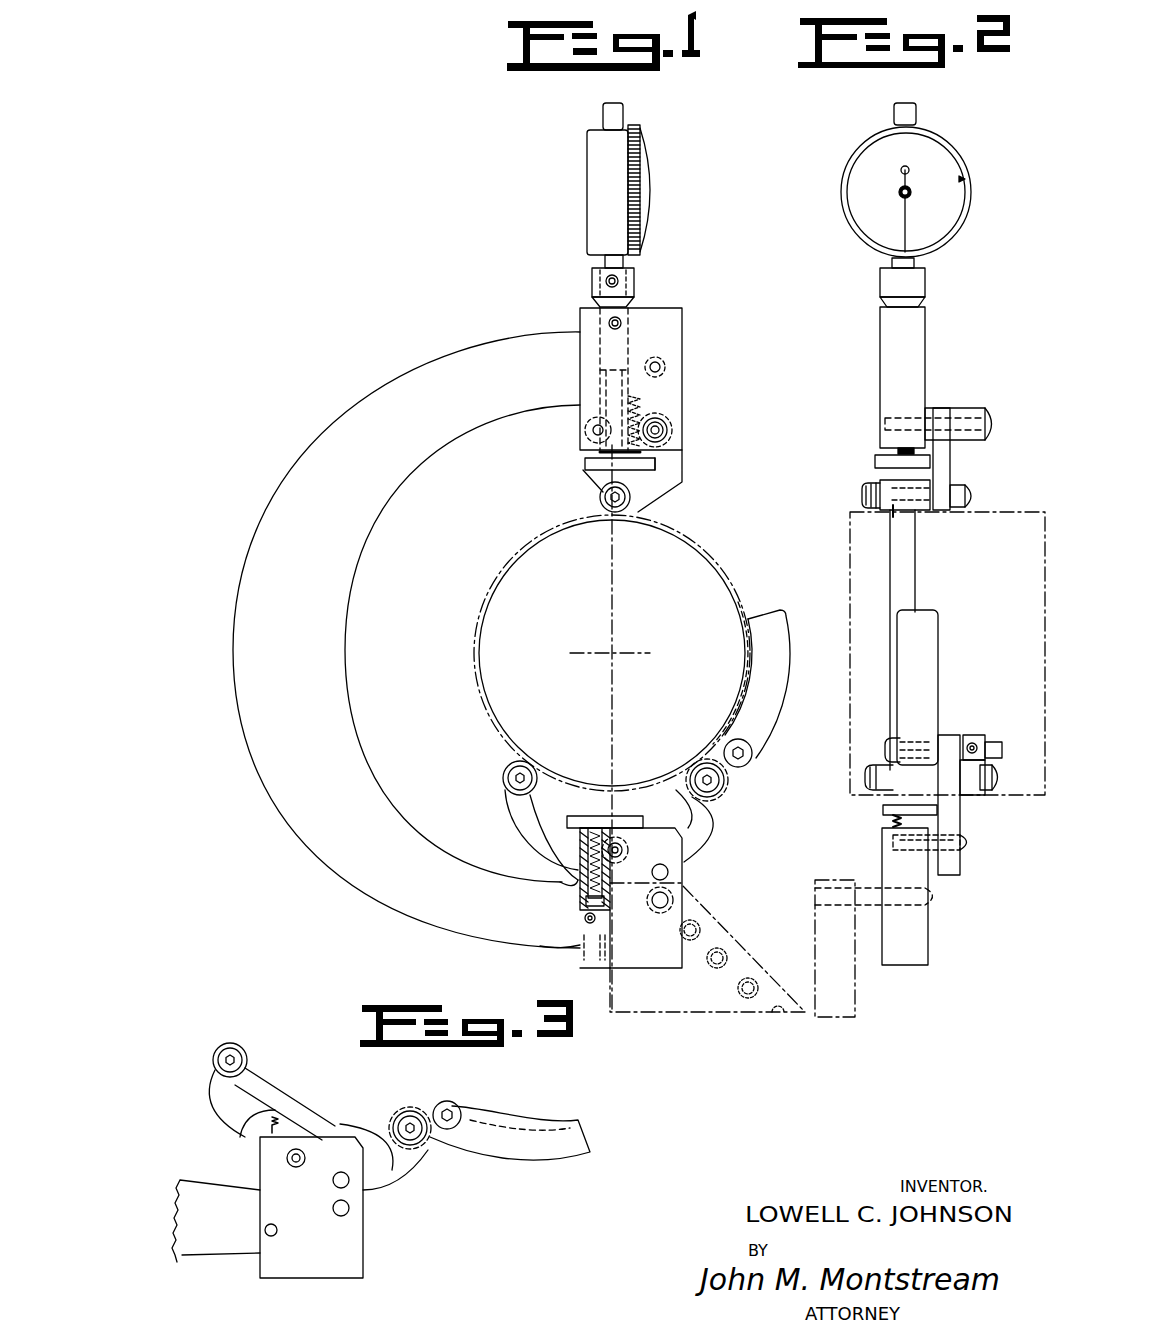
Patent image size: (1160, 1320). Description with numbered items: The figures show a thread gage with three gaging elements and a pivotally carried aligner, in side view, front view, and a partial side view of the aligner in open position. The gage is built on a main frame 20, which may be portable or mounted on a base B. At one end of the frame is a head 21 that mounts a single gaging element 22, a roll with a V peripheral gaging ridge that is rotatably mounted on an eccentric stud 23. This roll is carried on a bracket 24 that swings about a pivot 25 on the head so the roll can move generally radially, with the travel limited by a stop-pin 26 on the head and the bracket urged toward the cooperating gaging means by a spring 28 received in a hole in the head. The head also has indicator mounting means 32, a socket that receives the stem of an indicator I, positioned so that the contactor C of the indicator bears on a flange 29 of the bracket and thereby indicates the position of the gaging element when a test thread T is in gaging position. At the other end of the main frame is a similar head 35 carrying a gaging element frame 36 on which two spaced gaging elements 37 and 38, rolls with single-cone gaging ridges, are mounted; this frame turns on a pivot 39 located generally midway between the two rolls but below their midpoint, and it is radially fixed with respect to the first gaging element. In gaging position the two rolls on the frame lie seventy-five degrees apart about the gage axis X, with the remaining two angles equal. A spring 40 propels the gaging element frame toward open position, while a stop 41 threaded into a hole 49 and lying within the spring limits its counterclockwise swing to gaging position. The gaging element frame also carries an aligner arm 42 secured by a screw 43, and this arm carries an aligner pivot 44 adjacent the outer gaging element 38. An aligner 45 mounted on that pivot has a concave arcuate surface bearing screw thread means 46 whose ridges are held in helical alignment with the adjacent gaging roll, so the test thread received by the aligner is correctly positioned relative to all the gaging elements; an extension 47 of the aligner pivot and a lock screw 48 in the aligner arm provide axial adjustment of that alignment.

In FIG. 1, the indicator I is at (600, 187).
In FIG. 2, the indicator I is at (852, 187).
In FIG. 1, the main frame 20 is at (340, 432).
In FIG. 2, the main frame 20 is at (918, 576).
In FIG. 1, the head 21 is at (676, 332).
In FIG. 2, the head 21 is at (920, 329).
In FIG. 1, the gaging element 22 is at (600, 498).
In FIG. 2, the gaging element 22 is at (870, 486).
In FIG. 2, the eccentric stud 23 is at (905, 512).
In FIG. 1, the bracket 24 is at (660, 486).
In FIG. 2, the bracket 24 is at (950, 465).
In FIG. 1, the pivot 25 is at (668, 430).
In FIG. 2, the pivot 25 is at (935, 412).
In FIG. 1, the stop-pin 26 is at (594, 430).
In FIG. 1, the spring 28 is at (636, 408).
In FIG. 2, the spring 28 is at (896, 452).
In FIG. 1, the flange 29 is at (592, 465).
In FIG. 2, the flange 29 is at (876, 462).
In FIG. 1, the indicator mounting means 32 is at (600, 322).
In FIG. 1, the head 35 is at (640, 968).
In FIG. 2, the head 35 is at (918, 946).
In FIG. 1, the gaging element frame 36 is at (706, 830).
In FIG. 2, the gaging element frame 36 is at (952, 822).
In FIG. 3, the gaging element frame 36 is at (385, 1172).
In FIG. 1, the gaging element 37 is at (503, 776).
In FIG. 3, the gaging element 37 is at (228, 1042).
In FIG. 1, the gaging element 38 is at (714, 796).
In FIG. 2, the gaging element 38 is at (880, 766).
In FIG. 3, the gaging element 38 is at (400, 1110).
In FIG. 1, the pivot 39 is at (618, 846).
In FIG. 2, the pivot 39 is at (948, 860).
In FIG. 3, the pivot 39 is at (287, 1160).
In FIG. 1, the spring 40 is at (580, 830).
In FIG. 2, the spring 40 is at (886, 812).
In FIG. 3, the spring 40 is at (270, 1128).
In FIG. 1, the stop 41 is at (585, 848).
In FIG. 3, the stop 41 is at (270, 1137).
In FIG. 1, the aligner arm 42 is at (724, 780).
In FIG. 2, the aligner arm 42 is at (978, 795).
In FIG. 3, the aligner arm 42 is at (430, 1140).
In FIG. 2, the screw 43 is at (997, 776).
In FIG. 1, the aligner pivot 44 is at (752, 755).
In FIG. 2, the aligner pivot 44 is at (915, 735).
In FIG. 3, the aligner pivot 44 is at (455, 1102).
In FIG. 1, the aligner 45 is at (768, 708).
In FIG. 2, the aligner 45 is at (930, 665).
In FIG. 3, the aligner 45 is at (544, 1165).
In FIG. 1, the screw thread means 46 is at (740, 680).
In FIG. 3, the screw thread means 46 is at (540, 1118).
In FIG. 2, the extension 47 is at (1002, 750).
In FIG. 2, the lock screw 48 is at (972, 740).
In FIG. 1, the hole 49 is at (578, 958).
In FIG. 1, the base B is at (700, 1015).
In FIG. 2, the base B is at (856, 1000).
In FIG. 1, the contactor C is at (600, 462).
In FIG. 1, the test thread T is at (712, 553).
In FIG. 2, the test thread T is at (848, 566).
In FIG. 1, the gage axis X is at (622, 648).